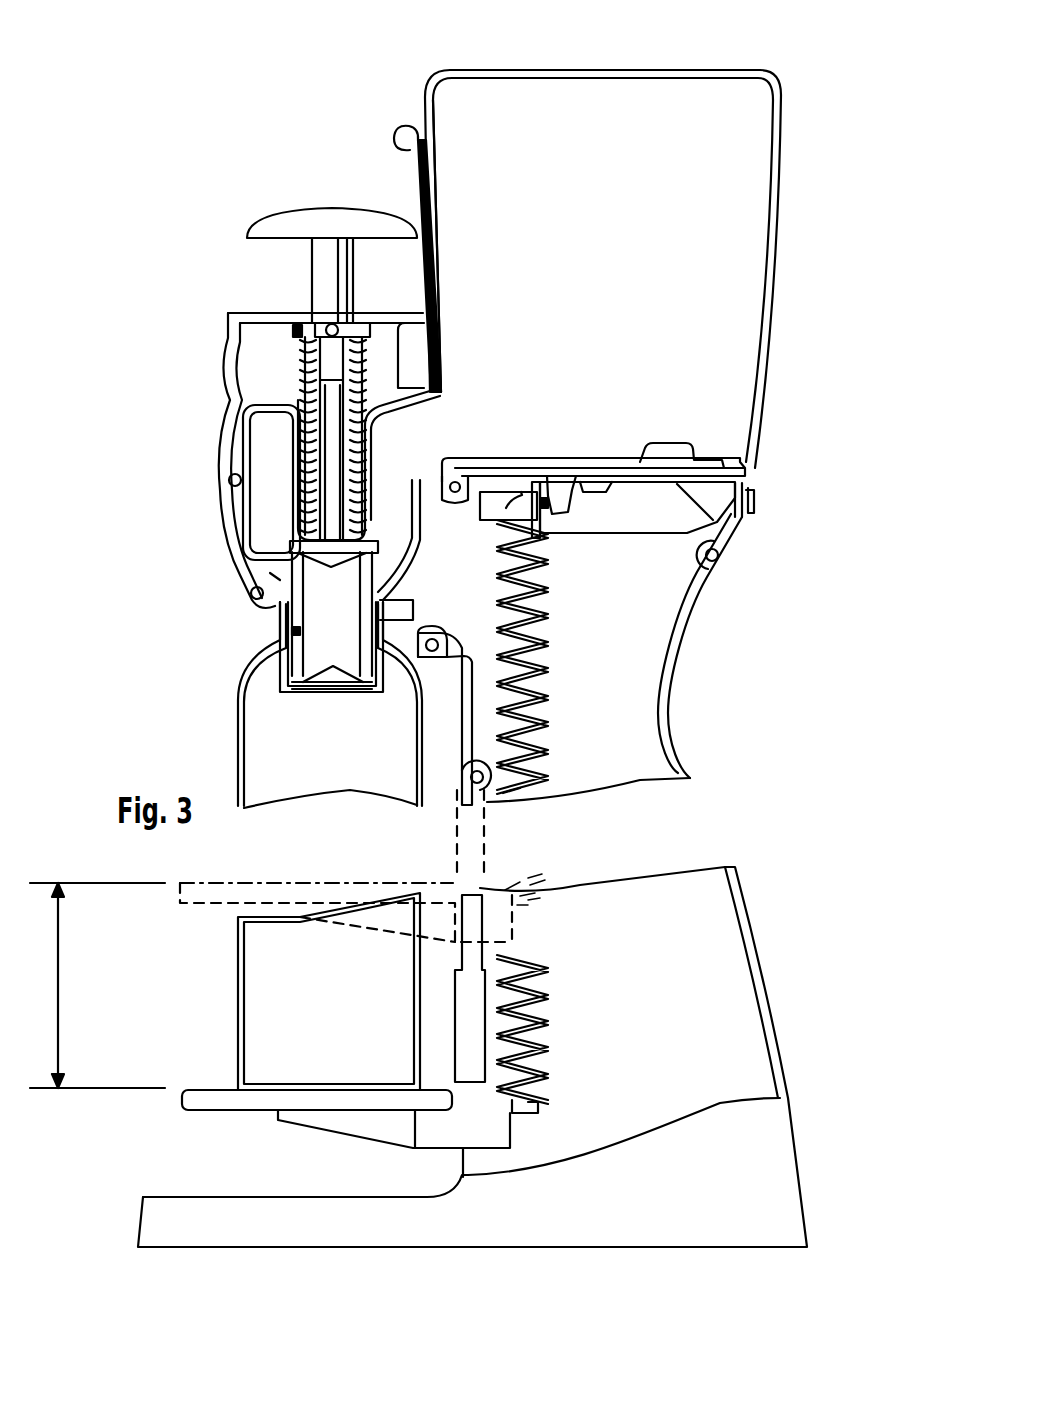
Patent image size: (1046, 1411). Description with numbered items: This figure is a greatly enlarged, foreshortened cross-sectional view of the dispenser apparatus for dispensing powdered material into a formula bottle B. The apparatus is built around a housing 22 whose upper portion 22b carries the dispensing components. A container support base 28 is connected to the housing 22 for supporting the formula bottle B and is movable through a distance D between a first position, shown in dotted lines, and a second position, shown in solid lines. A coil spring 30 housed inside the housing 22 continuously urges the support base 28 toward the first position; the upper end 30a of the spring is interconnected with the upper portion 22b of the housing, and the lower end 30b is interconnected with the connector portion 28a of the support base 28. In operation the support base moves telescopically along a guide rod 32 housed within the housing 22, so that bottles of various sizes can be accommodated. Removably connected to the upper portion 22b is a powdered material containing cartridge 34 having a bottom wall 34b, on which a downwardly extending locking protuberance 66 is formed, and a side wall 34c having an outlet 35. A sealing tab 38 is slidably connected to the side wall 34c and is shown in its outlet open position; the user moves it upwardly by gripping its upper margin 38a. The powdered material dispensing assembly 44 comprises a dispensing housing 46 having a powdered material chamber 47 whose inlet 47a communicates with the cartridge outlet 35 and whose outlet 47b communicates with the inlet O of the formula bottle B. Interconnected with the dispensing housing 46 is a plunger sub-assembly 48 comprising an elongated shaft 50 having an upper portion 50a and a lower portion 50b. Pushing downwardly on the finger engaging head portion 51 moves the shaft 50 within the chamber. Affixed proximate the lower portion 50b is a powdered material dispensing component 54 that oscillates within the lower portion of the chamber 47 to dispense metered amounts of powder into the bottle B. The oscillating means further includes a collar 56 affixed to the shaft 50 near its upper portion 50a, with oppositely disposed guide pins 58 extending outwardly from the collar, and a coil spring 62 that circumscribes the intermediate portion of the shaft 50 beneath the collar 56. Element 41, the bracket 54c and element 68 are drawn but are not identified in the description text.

The housing 22 is at (685, 738).
The upper portion of housing 22b is at (742, 530).
The container support base 28 is at (215, 1106).
The connector portion of support base 28a is at (486, 1145).
The coil spring 30 is at (540, 656).
The upper end of spring 30a is at (508, 494).
The lower end of spring 30b is at (522, 1104).
The guide rod 32 is at (496, 918).
The powdered material containing cartridge 34 is at (695, 68).
The bottom wall 34b is at (754, 483).
The side wall 34c is at (437, 246).
The outlet 35 is at (446, 400).
The sealing tab 38 is at (420, 183).
The upper margin of sealing tab 38a is at (402, 131).
The stop member 41 is at (688, 452).
The powdered material dispensing assembly 44 is at (218, 329).
The dispensing housing 46 is at (228, 455).
The powdered material chamber 47 is at (386, 500).
The inlet 47a is at (446, 462).
The outlet 47b is at (378, 660).
The plunger sub-assembly 48 is at (253, 284).
The elongated shaft 50 is at (346, 414).
The upper portion of shaft 50a is at (392, 340).
The lower portion of shaft 50b is at (376, 542).
The finger engaging head portion 51 is at (272, 232).
The powdered material dispensing component 54 is at (276, 636).
The tube bracket 54c is at (272, 570).
The collar 56 is at (296, 337).
The guide pins 58 is at (346, 326).
The coil spring 62 is at (371, 466).
The locking protuberance 66 is at (598, 494).
The latch pin 68 is at (562, 512).
The formula bottle B is at (238, 710).
The inlet of formula bottle O is at (375, 628).
The distance D is at (97, 985).